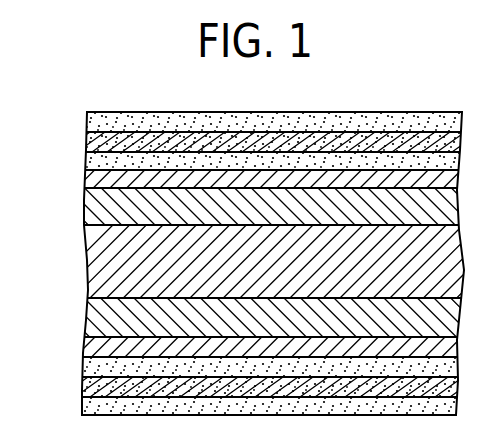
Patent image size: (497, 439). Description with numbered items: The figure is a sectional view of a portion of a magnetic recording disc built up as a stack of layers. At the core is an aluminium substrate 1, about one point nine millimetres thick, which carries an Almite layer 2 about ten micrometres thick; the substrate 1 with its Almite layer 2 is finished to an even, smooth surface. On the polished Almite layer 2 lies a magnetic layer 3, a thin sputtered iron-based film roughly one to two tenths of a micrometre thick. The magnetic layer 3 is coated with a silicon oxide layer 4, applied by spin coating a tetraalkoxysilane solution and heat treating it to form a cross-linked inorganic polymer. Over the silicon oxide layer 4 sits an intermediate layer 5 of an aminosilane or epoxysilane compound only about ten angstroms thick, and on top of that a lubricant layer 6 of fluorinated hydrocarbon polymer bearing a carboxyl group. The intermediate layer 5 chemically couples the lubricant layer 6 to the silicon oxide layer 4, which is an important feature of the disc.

The aluminium substrate 1 is at (86, 268).
The Almite layer 2 is at (85, 207).
The magnetic layer 3 is at (86, 179).
The silicon oxide layer 4 is at (87, 162).
The intermediate layer 5 is at (87, 144).
The lubricant layer 6 is at (87, 115).